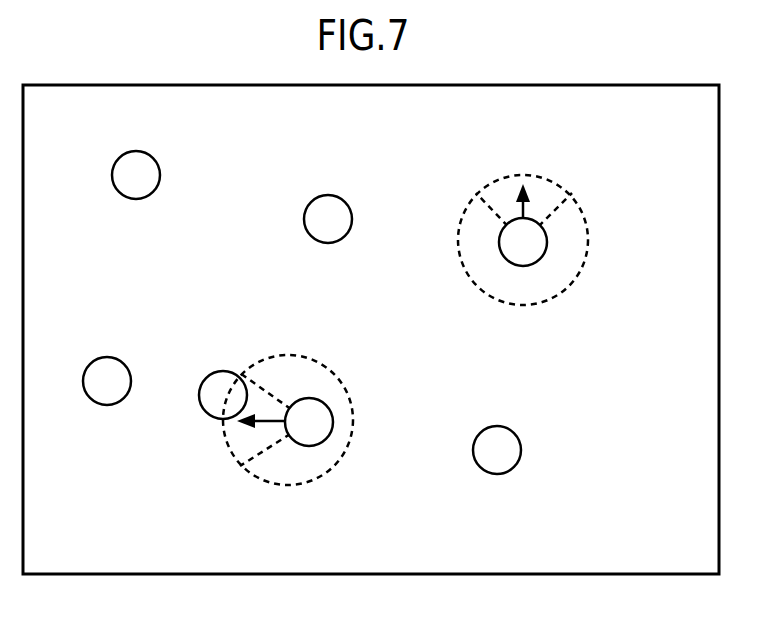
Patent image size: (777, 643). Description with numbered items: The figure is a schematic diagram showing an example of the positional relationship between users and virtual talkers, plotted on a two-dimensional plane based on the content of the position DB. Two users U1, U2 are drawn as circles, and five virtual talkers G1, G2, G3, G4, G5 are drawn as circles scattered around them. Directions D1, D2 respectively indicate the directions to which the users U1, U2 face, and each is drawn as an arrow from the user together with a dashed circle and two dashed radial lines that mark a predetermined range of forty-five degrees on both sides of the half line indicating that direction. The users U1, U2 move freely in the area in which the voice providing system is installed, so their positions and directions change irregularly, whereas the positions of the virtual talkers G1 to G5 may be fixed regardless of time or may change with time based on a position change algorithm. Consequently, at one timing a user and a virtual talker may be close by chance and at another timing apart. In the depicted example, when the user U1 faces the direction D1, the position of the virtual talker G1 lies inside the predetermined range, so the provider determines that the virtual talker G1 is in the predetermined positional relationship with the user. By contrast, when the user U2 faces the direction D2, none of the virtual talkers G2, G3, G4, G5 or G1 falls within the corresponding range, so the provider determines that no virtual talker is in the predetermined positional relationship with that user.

The virtual talker G1 is at (223, 395).
The virtual talker G2 is at (497, 450).
The virtual talker G3 is at (328, 219).
The virtual talker G4 is at (107, 381).
The virtual talker G5 is at (136, 175).
The user U1 is at (288, 420).
The user U2 is at (523, 240).
The direction D1 is at (265, 421).
The direction D2 is at (526, 208).